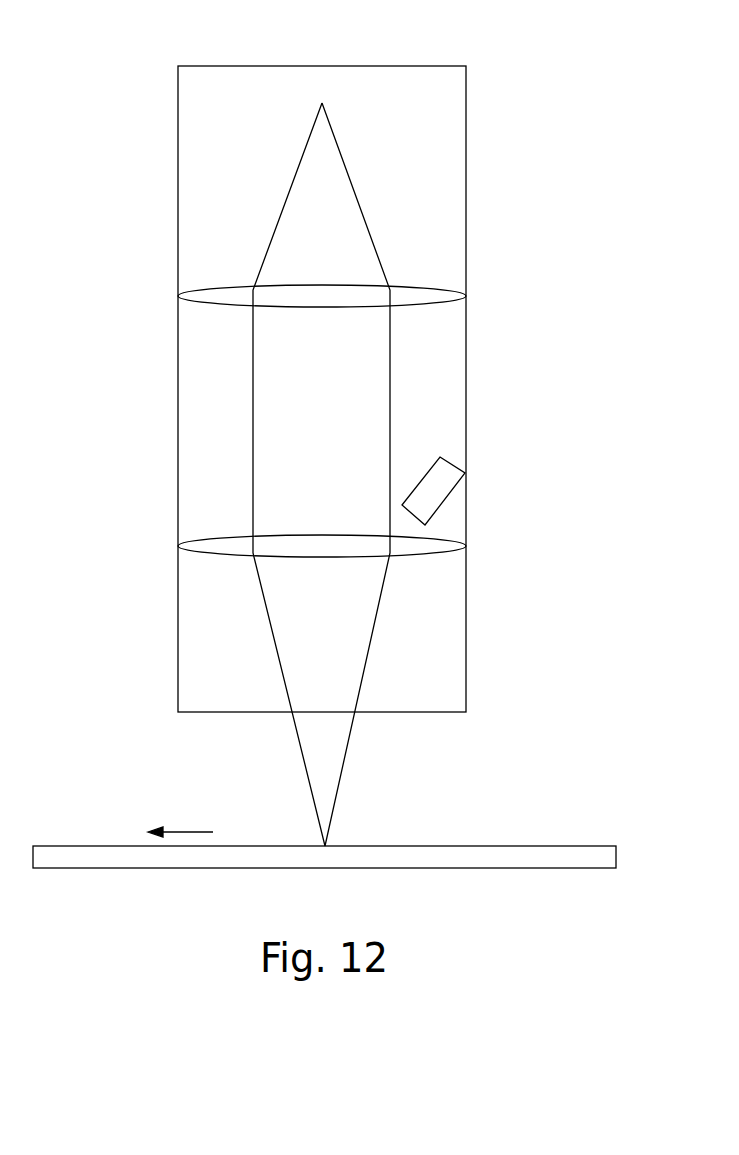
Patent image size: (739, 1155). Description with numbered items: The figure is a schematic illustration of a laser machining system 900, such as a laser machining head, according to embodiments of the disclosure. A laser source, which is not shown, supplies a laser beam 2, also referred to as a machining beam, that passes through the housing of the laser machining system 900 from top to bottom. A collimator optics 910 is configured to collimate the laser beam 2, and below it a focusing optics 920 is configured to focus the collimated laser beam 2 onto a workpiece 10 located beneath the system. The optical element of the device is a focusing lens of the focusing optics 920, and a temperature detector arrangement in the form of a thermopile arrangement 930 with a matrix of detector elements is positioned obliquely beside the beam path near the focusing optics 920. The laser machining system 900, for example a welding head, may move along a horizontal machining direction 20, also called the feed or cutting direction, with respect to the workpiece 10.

The laser machining system 900 is at (560, 72).
The laser beam 2 is at (283, 437).
The collimator optics 910 is at (178, 298).
The focusing optics 920 is at (178, 549).
The thermopile arrangement 930 is at (465, 470).
The workpiece 10 is at (616, 852).
The machining direction 20 is at (180, 832).